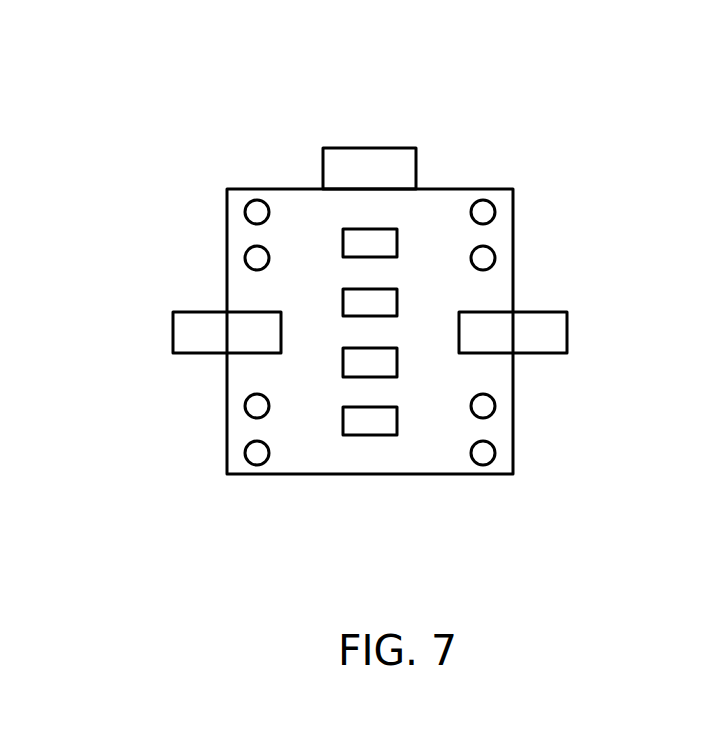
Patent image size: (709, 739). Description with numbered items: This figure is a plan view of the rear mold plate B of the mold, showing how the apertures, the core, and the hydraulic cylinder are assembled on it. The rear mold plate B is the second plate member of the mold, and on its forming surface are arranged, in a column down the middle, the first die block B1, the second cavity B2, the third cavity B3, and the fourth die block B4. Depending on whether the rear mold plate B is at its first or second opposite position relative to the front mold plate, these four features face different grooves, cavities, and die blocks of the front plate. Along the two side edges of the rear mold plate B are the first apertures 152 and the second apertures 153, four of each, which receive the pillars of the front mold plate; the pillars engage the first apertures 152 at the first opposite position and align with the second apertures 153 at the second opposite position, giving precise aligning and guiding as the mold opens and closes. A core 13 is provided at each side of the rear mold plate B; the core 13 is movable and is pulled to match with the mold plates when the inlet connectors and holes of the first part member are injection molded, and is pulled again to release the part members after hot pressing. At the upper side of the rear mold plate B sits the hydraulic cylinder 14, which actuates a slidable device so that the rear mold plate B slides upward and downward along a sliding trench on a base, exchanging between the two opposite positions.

The rear mold plate B is at (278, 188).
The hydraulic cylinder 14 is at (349, 163).
The core 13 is at (192, 332).
The first apertures 152 is at (245, 212).
The second apertures 153 is at (245, 258).
The first die block B1 is at (398, 241).
The second cavity B2 is at (397, 302).
The third cavity B3 is at (397, 362).
The fourth die block B4 is at (397, 420).